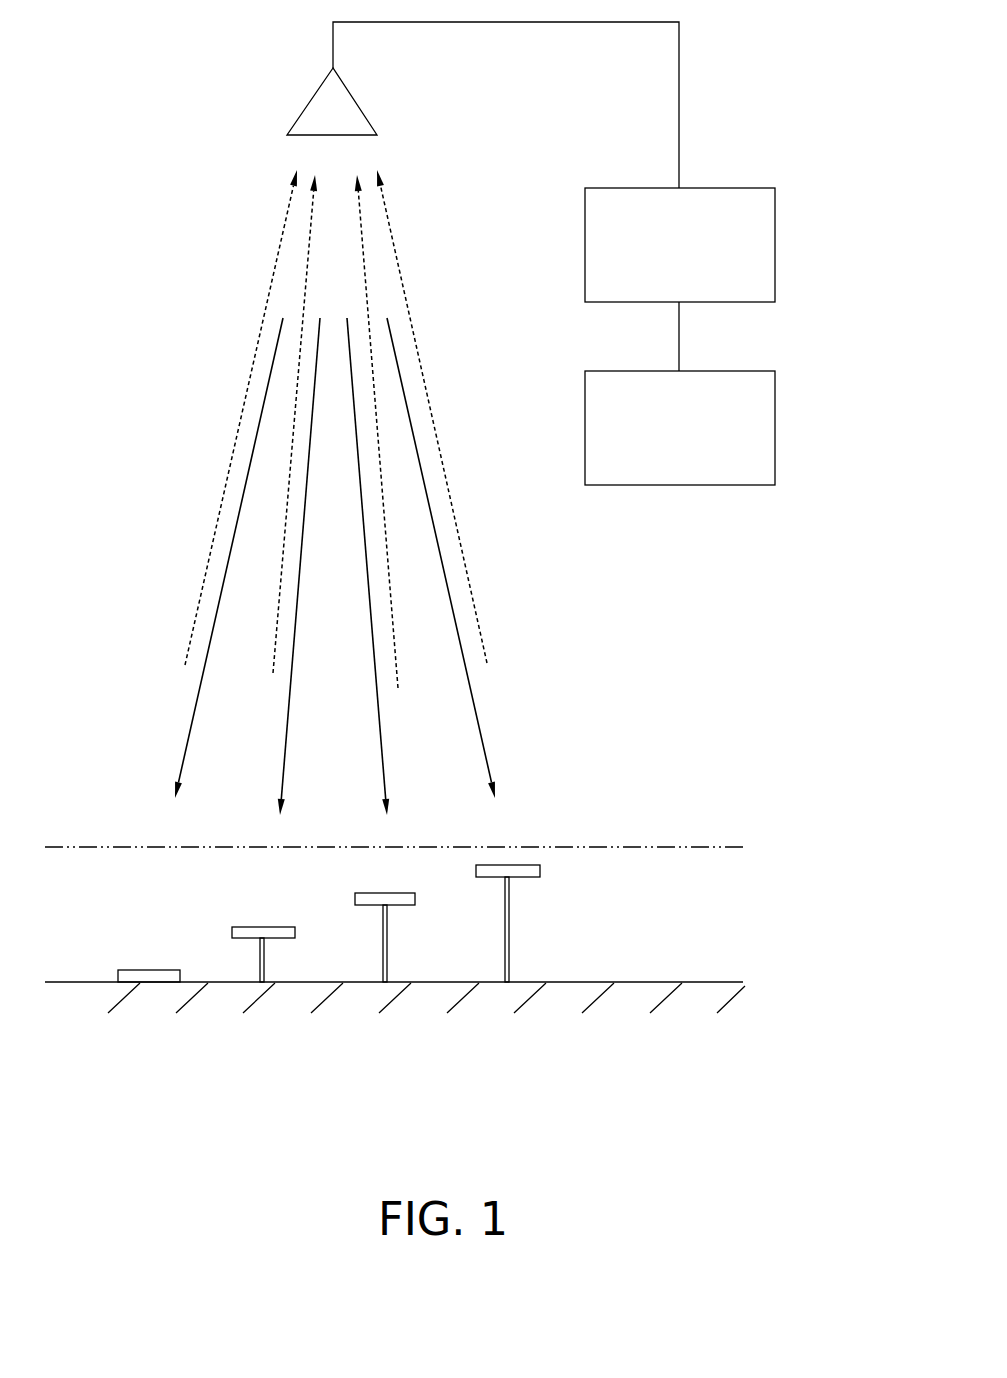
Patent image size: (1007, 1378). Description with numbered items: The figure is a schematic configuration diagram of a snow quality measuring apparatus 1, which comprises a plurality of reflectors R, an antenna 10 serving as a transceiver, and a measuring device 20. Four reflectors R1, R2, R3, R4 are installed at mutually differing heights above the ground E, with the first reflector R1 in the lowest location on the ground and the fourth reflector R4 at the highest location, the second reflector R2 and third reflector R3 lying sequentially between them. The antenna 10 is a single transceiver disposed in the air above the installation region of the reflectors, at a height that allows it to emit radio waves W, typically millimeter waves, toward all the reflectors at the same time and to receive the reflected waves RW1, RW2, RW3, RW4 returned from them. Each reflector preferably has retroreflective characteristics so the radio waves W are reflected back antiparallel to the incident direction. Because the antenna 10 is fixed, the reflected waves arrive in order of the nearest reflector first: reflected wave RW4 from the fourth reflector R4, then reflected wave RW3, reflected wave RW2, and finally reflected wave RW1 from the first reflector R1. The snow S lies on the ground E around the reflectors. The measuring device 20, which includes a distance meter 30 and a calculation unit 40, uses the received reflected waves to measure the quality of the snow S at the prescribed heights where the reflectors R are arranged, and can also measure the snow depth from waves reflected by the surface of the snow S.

The snow quality measuring apparatus 1 is at (138, 141).
The antenna 10 is at (378, 128).
The measuring device 20 is at (724, 311).
The distance meter 30 is at (730, 186).
The calculation unit 40 is at (730, 360).
The reflected wave RW1 is at (285, 226).
The reflected wave RW2 is at (307, 269).
The reflected wave RW3 is at (364, 269).
The reflected wave RW4 is at (389, 226).
The radio waves W is at (185, 743).
The snow S is at (713, 845).
The ground E is at (713, 980).
The first reflector R1 is at (148, 972).
The second reflector R2 is at (250, 940).
The third reflector R3 is at (360, 907).
The fourth reflector R4 is at (488, 879).
The reflectors R is at (507, 1092).